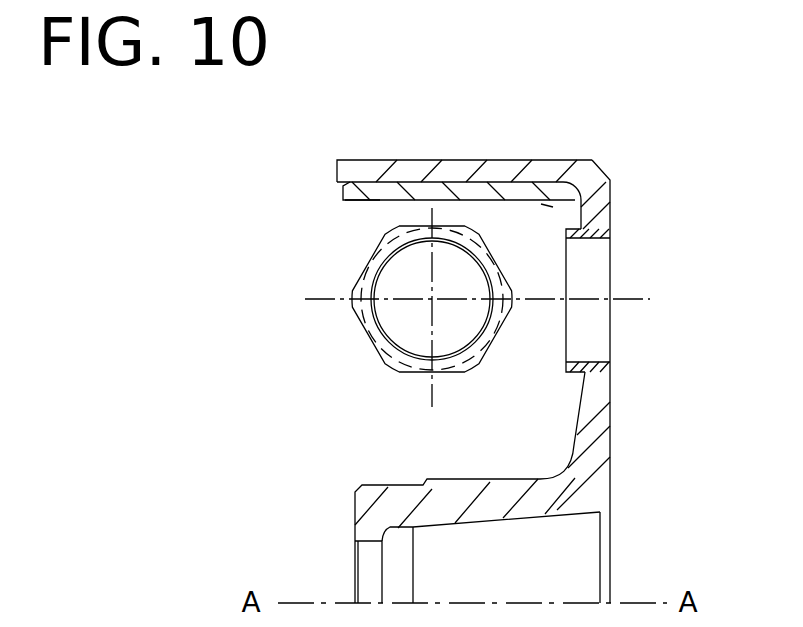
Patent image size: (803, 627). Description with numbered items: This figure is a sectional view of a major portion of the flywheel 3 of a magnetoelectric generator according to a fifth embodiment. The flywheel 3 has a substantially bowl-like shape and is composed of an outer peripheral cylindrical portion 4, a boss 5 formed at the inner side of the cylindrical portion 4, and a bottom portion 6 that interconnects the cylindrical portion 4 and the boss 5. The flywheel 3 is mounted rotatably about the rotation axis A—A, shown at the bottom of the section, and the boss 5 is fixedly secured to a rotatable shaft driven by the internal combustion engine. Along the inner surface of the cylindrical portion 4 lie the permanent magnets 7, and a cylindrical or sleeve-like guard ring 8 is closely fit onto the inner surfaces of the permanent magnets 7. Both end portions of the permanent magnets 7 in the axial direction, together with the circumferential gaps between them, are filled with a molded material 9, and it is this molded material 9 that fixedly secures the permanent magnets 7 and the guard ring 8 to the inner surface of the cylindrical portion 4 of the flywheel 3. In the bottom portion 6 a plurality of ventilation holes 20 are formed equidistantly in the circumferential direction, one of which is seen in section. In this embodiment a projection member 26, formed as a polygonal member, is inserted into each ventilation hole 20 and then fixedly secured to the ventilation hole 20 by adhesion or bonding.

The flywheel 3 is at (637, 197).
The outer peripheral cylindrical portion 4 is at (447, 158).
The boss 5 is at (510, 493).
The bottom portion 6 is at (610, 428).
The permanent magnets 7 is at (416, 190).
The guard ring 8 is at (383, 205).
The molded material 9 is at (548, 204).
The ventilation hole 20 is at (603, 357).
The projection member 26 is at (605, 260).